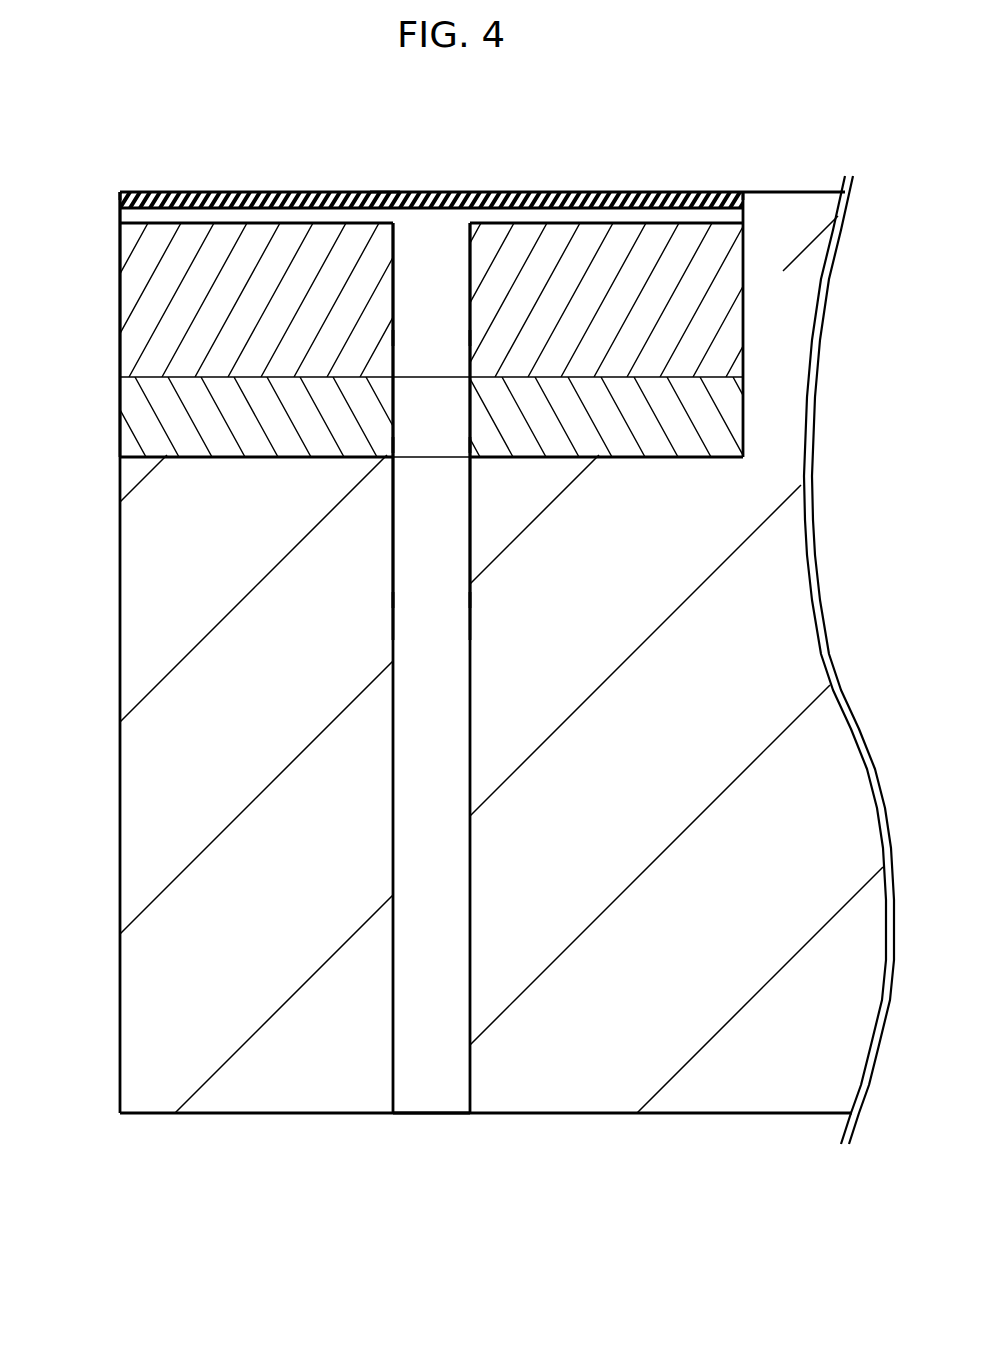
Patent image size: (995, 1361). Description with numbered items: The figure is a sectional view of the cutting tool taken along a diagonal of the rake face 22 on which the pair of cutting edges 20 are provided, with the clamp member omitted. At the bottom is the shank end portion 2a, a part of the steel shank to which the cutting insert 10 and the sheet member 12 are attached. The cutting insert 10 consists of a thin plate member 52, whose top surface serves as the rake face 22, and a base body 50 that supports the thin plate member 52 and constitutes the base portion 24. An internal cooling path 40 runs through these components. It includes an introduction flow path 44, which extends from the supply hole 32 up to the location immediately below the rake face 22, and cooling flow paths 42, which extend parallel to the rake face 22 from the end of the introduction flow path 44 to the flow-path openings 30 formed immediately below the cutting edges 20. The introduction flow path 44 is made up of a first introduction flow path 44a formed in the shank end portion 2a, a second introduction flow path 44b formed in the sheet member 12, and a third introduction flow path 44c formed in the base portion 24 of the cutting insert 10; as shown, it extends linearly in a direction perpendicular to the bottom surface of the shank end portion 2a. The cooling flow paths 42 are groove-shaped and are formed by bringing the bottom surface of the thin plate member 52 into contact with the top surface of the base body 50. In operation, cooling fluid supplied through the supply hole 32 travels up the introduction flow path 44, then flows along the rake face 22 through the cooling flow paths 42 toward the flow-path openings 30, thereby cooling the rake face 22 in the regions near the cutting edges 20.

The shank end portion 2a is at (135, 878).
The cutting insert 10 is at (747, 222).
The sheet member 12 is at (747, 379).
The cutting edges 20 is at (120, 190).
The rake face 22 is at (170, 192).
The base portion 24 is at (130, 330).
The flow-path openings 30 is at (120, 216).
The supply hole 32 is at (440, 1115).
The internal cooling path 40 is at (432, 255).
The cooling flow paths 42 is at (240, 222).
The introduction flow path 44 is at (50, 460).
The first introduction flow path 44a is at (415, 600).
The second introduction flow path 44b is at (415, 445).
The third introduction flow path 44c is at (415, 338).
The base body 50 is at (118, 279).
The thin plate member 52 is at (383, 183).